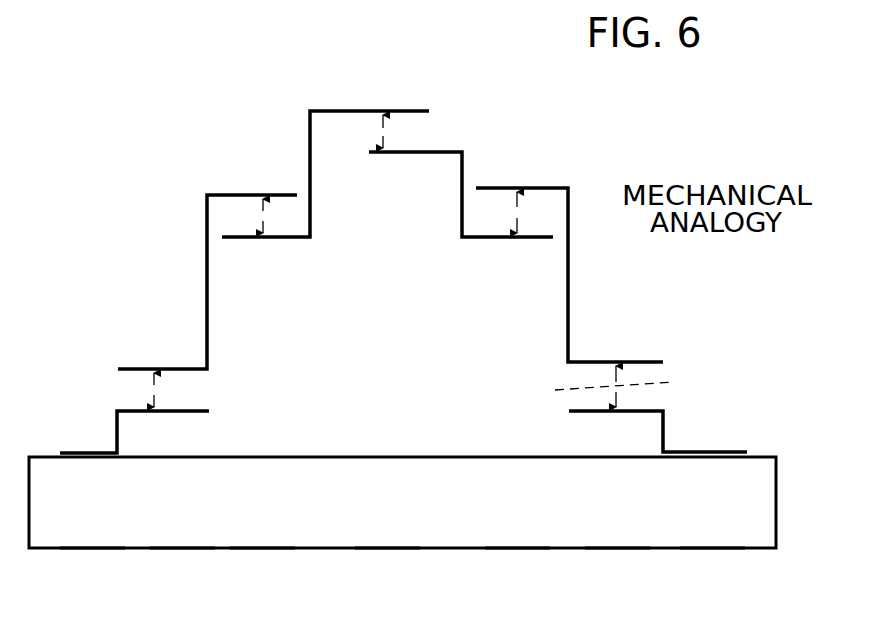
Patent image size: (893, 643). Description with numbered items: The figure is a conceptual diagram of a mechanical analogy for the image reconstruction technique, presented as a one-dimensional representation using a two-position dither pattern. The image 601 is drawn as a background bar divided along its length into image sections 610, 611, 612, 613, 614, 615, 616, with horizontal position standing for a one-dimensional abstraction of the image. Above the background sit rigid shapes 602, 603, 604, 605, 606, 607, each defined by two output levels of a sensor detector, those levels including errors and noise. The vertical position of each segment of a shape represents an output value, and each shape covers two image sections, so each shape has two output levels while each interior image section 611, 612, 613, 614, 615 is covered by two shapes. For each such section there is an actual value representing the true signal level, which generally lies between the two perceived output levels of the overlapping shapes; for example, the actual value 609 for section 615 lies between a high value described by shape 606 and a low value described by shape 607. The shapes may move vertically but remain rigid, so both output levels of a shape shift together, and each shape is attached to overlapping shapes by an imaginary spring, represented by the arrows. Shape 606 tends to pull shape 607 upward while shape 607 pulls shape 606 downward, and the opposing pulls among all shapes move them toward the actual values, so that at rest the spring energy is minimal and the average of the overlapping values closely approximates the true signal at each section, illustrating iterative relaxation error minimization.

The image 601 is at (778, 501).
The rigid shape 602 is at (72, 452).
The rigid shape 603 is at (153, 368).
The rigid shape 604 is at (308, 158).
The rigid shape 605 is at (461, 151).
The rigid shape 606 is at (525, 188).
The rigid shape 607 is at (716, 452).
The actual value 609 is at (685, 378).
The image section 610 is at (93, 550).
The image section 611 is at (182, 549).
The image section 612 is at (262, 549).
The image section 613 is at (387, 549).
The image section 614 is at (519, 549).
The image section 615 is at (618, 549).
The image section 616 is at (713, 549).